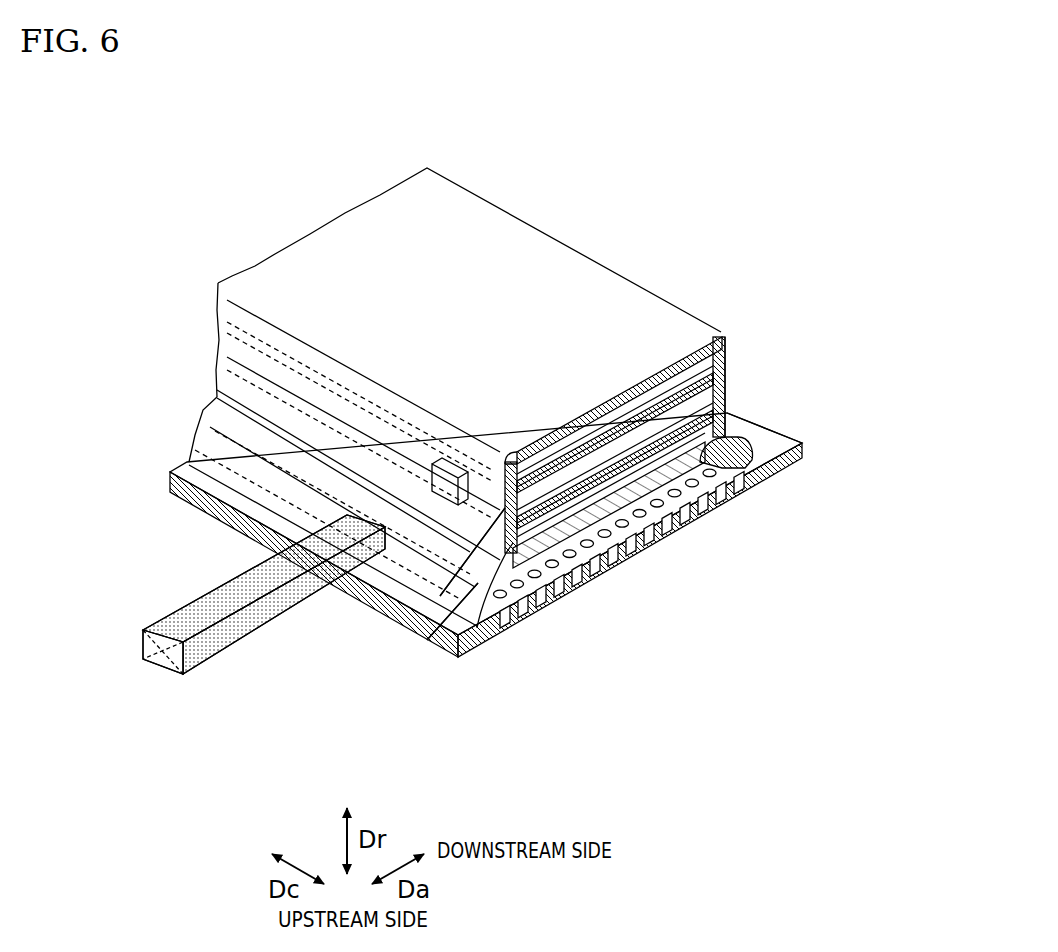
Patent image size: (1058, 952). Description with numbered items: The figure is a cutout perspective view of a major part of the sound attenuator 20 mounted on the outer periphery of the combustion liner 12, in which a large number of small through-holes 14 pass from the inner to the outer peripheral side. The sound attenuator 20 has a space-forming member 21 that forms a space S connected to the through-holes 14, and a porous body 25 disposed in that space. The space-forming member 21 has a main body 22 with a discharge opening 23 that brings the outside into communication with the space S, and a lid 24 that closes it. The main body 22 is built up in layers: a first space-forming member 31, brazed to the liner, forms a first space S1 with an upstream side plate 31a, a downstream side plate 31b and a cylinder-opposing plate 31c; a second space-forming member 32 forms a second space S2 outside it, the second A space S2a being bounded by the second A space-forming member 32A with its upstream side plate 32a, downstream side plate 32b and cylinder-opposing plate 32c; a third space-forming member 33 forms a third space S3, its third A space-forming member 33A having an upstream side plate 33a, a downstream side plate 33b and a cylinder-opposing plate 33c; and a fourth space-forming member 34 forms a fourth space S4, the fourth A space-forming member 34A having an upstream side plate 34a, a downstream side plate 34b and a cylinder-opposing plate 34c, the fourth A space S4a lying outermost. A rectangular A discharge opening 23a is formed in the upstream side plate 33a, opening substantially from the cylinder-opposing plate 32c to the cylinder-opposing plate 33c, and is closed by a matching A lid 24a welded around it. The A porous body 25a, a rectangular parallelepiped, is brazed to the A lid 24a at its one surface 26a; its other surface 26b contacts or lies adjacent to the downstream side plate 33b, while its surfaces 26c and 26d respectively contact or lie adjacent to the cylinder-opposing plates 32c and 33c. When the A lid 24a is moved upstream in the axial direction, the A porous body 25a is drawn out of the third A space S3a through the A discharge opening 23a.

The combustion liner 12 is at (519, 568).
The through-holes 14 is at (626, 548).
The sound attenuator 20 is at (408, 414).
The space-forming member 21 is at (468, 324).
The main body 22 is at (293, 333).
The discharge opening 23 is at (300, 505).
The A discharge opening 23a is at (217, 390).
The lid 24 is at (201, 625).
The A lid 24a is at (158, 664).
The porous body 25 is at (201, 625).
The A porous body 25a is at (240, 683).
The one surface 26a is at (160, 660).
The other surface 26b is at (430, 476).
The one surface 26c is at (201, 625).
The other surface 26d is at (217, 605).
The first space-forming member 31 is at (519, 568).
The upstream side plate 31a is at (506, 508).
The downstream side plate 31b is at (776, 481).
The cylinder-opposing plate 31c is at (597, 522).
The second space-forming member 32 is at (720, 540).
The second A space-forming member 32A is at (726, 451).
The upstream side plate 32a is at (486, 530).
The downstream side plate 32b is at (738, 430).
The cylinder-opposing plate 32c is at (543, 517).
The third space-forming member 33 is at (697, 373).
The third A space-forming member 33A is at (697, 413).
The upstream side plate 33a is at (420, 598).
The downstream side plate 33b is at (726, 402).
The cylinder-opposing plate 33c is at (683, 390).
The fourth space-forming member 34 is at (675, 359).
The fourth A space-forming member 34A is at (779, 351).
The upstream side plate 34a is at (227, 356).
The downstream side plate 34b is at (727, 345).
The cylinder-opposing plate 34c is at (610, 397).
The space S is at (642, 533).
The first space S1 is at (693, 490).
The second space S2 is at (611, 555).
The second A space S2a is at (600, 531).
The third space S3 is at (641, 373).
The third A space S3a is at (654, 430).
The fourth space S4 is at (615, 320).
The fourth A space S4a is at (590, 430).